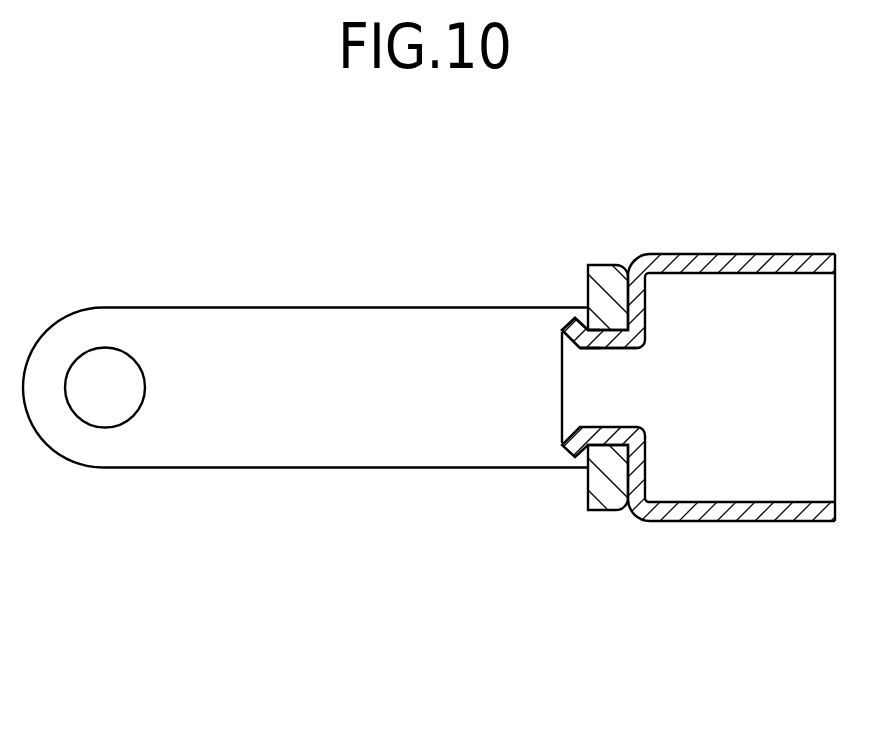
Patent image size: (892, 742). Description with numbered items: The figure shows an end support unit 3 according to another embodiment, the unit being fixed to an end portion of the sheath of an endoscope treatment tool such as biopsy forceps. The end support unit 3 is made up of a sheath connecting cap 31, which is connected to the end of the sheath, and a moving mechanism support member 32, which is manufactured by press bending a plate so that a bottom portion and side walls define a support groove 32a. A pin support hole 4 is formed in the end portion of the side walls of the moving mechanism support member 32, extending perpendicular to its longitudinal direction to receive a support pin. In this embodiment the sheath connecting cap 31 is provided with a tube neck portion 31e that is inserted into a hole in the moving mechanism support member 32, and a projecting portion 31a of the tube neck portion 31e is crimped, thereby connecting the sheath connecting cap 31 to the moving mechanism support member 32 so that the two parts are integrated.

The end support unit 3 is at (593, 442).
The pin support hole 4 is at (100, 427).
The sheath connecting cap 31 is at (688, 515).
The projecting portion 31a is at (567, 322).
The tube neck portion 31e is at (607, 343).
The moving mechanism support member 32 is at (717, 632).
The support groove 32a is at (287, 448).